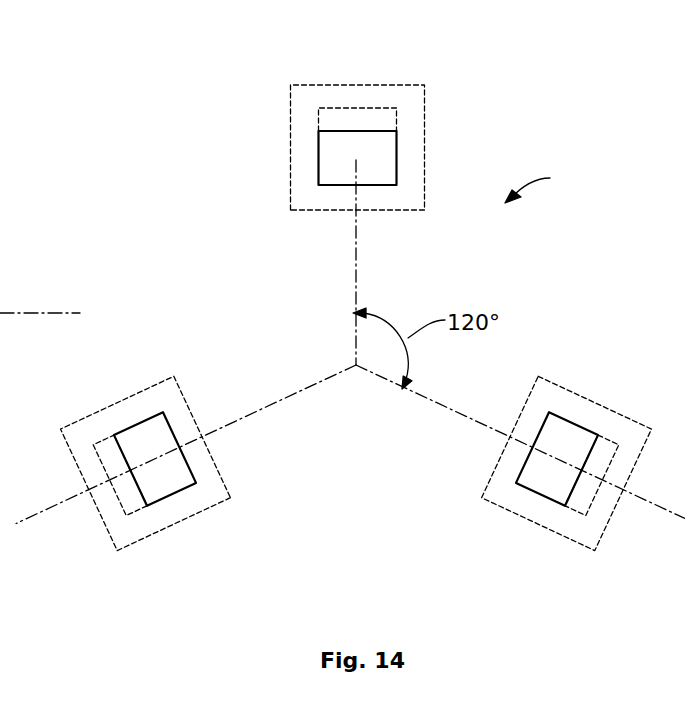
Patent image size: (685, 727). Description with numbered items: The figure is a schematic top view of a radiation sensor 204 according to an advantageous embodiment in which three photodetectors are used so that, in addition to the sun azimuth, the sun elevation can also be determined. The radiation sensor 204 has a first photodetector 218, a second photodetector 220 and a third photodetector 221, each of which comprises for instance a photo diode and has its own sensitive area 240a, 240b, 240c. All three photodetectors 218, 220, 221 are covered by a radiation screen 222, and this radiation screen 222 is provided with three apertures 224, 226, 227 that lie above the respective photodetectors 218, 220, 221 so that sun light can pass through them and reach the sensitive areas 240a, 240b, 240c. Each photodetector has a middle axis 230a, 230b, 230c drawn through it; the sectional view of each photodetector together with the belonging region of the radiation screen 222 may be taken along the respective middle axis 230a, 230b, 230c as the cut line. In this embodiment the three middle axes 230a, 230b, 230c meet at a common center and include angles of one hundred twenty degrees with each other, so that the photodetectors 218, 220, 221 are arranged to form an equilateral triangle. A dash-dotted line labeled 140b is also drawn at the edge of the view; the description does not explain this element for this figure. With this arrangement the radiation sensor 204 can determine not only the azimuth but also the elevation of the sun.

The radiation sensor 204 is at (552, 185).
The first photodetector 218 is at (167, 527).
The second photodetector 220 is at (520, 515).
The third photodetector 221 is at (368, 82).
The radiation screen 222 is at (283, 295).
The aperture 224 is at (148, 415).
The aperture 226 is at (567, 418).
The aperture 227 is at (318, 178).
The middle axis 230a is at (258, 412).
The middle axis 230b is at (447, 410).
The middle axis 230c is at (356, 263).
The sensitive area 240a is at (115, 498).
The sensitive area 240b is at (592, 510).
The sensitive area 240c is at (338, 107).
The pivot axis 140b is at (0, 362).